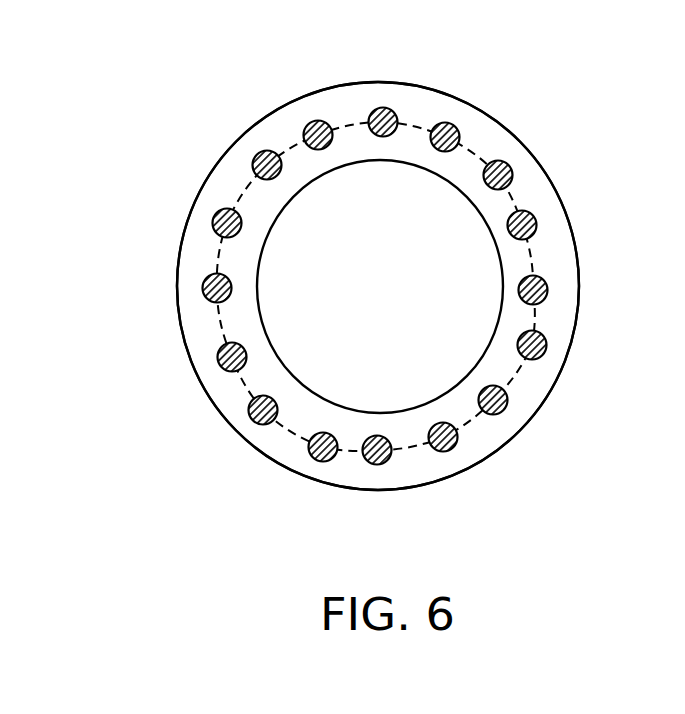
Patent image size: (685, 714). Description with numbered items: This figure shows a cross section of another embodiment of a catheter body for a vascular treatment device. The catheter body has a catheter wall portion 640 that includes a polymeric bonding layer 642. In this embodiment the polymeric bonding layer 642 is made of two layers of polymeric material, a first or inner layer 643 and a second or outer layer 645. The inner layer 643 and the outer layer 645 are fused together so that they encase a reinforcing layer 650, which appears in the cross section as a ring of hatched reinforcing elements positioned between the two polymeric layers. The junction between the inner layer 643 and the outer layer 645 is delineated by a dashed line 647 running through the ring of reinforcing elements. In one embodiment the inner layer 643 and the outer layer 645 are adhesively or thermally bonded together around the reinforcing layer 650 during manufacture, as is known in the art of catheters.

The catheter wall portion 640 is at (440, 93).
The polymeric bonding layer 642 is at (577, 263).
The first (inner) layer 643 is at (260, 207).
The second (outer) layer 645 is at (228, 378).
The dashed line 647 is at (302, 432).
The reinforcing layer 650 is at (548, 178).